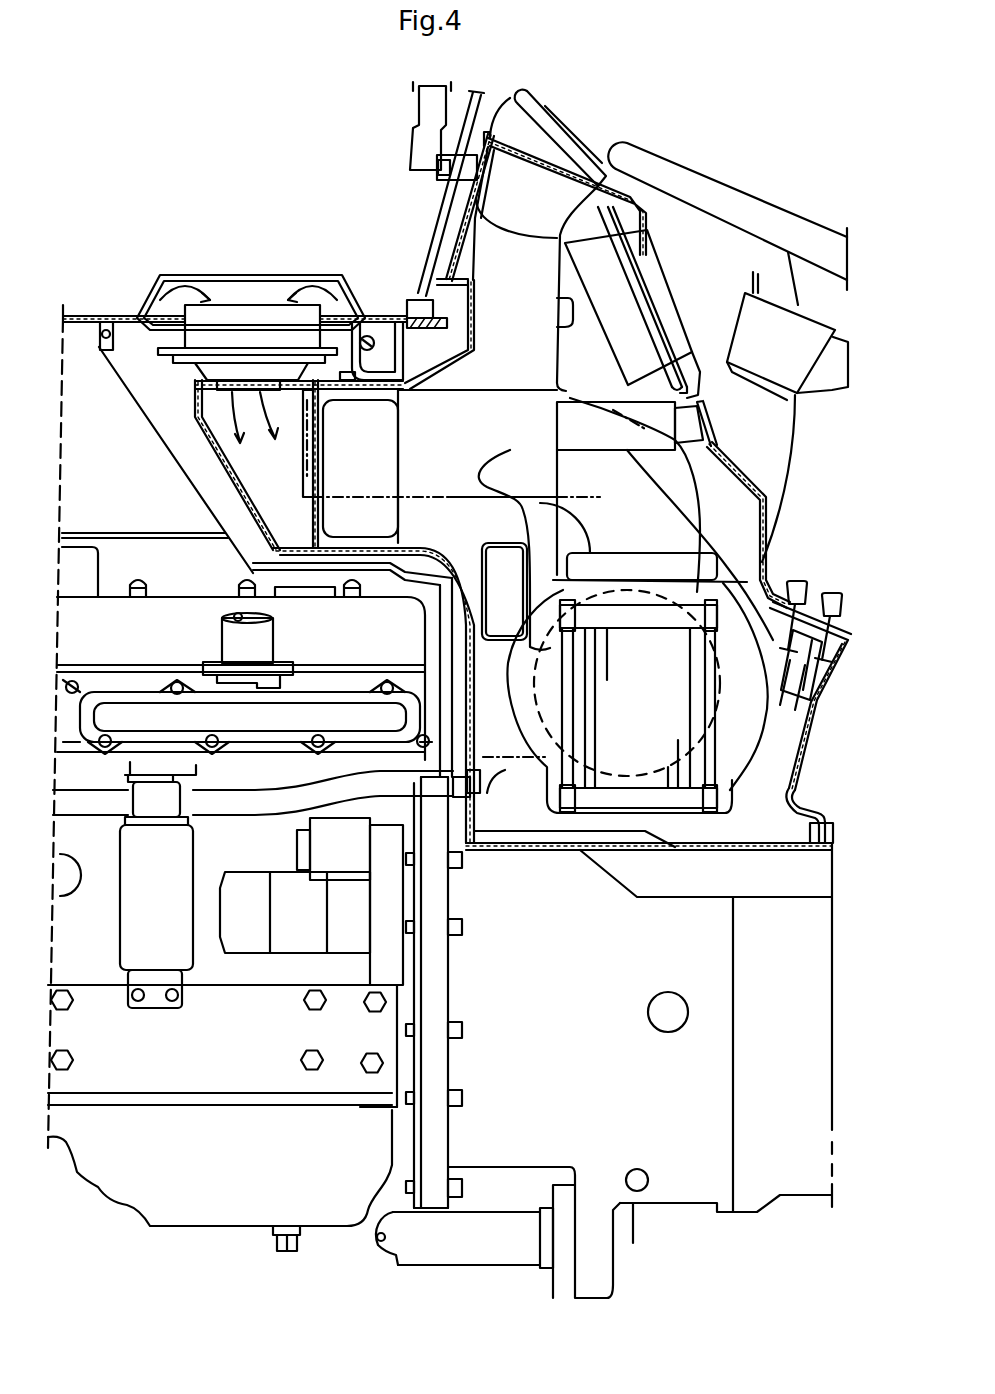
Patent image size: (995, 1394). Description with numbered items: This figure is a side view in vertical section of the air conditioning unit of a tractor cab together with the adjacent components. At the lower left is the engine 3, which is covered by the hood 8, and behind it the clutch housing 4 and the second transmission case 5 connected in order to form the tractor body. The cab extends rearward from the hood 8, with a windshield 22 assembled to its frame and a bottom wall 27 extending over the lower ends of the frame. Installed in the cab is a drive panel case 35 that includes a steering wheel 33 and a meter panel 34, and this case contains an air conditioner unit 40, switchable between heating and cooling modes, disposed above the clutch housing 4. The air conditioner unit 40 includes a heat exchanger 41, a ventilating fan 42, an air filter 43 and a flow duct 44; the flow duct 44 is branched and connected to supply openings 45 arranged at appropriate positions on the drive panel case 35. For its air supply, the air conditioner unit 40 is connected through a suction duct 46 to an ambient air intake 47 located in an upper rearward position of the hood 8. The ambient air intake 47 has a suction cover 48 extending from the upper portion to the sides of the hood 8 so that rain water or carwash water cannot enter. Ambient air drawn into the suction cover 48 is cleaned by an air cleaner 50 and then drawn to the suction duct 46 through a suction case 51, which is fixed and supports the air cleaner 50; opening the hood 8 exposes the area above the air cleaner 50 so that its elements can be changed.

The engine 3 is at (117, 604).
The clutch housing 4 is at (678, 1197).
The second transmission case 5 is at (797, 1190).
The hood 8 is at (78, 316).
The windshield 22 is at (417, 110).
The bottom wall 27 is at (773, 847).
The steering wheel 33 is at (748, 196).
The meter panel 34 is at (670, 283).
The drive panel case 35 is at (737, 473).
The air conditioner unit 40 is at (717, 530).
The heat exchanger 41 is at (320, 453).
The ventilating fan 42 is at (760, 721).
The air filter 43 is at (560, 768).
The flow duct 44 is at (540, 280).
The supply openings 45 is at (571, 130).
The suction duct 46 is at (515, 388).
The ambient air intake 47 is at (183, 268).
The suction cover 48 is at (303, 273).
The air cleaner 50 is at (237, 310).
The suction case 51 is at (193, 403).